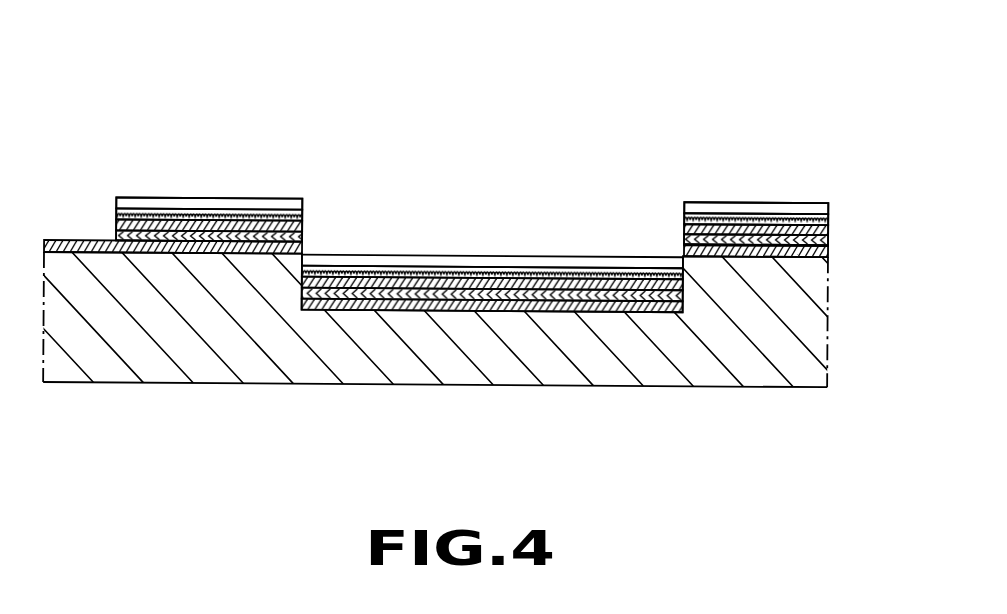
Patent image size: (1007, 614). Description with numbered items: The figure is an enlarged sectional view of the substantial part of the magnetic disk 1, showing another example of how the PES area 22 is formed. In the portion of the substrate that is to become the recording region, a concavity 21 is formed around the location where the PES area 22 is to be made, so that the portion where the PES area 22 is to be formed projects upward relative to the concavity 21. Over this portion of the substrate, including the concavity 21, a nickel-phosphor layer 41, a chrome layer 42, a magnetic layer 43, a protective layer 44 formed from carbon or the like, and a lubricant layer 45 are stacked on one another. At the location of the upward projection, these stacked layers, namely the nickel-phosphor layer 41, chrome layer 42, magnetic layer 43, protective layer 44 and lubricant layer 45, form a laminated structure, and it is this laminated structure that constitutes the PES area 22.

The magnetic disk 1 is at (489, 114).
The concavity 21 is at (105, 362).
The PES area 22 is at (214, 117).
The nickel-phosphor layer 41 is at (165, 253).
The chrome layer 42 is at (128, 203).
The magnetic layer 43 is at (177, 203).
The protective layer 44 is at (240, 203).
The lubricant layer 45 is at (273, 203).